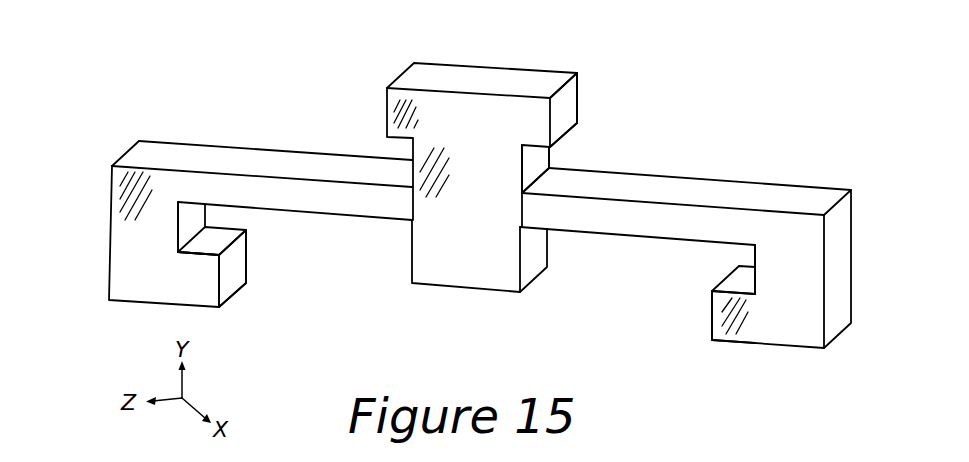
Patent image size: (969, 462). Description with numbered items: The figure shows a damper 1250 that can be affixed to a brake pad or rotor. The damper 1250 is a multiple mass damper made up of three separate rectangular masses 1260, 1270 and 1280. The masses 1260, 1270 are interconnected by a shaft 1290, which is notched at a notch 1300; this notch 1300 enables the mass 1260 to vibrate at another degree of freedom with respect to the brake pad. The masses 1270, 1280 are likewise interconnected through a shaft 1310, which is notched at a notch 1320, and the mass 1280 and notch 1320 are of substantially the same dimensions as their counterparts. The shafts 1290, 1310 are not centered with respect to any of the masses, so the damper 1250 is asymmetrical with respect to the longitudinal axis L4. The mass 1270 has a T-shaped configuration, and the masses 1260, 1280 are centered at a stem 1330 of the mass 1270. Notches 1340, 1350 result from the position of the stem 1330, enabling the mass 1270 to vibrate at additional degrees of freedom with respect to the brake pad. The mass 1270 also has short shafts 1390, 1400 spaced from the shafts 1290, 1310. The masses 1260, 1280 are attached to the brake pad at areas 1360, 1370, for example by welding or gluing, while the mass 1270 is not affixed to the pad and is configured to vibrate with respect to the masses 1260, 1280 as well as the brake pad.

The damper 1250 is at (732, 106).
The mass 1260 is at (125, 293).
The mass 1280 is at (802, 342).
The mass 1270 is at (487, 78).
The shaft 1290 is at (298, 205).
The shaft 1310 is at (590, 224).
The notch 1300 is at (178, 228).
The notch 1320 is at (757, 275).
The stem 1330 is at (410, 267).
The notch 1340 is at (413, 167).
The notch 1350 is at (521, 173).
The area 1360 is at (214, 321).
The area 1370 is at (727, 354).
The shaft 1390 is at (380, 109).
The shaft 1400 is at (572, 105).
The longitudinal axis L4 is at (110, 191).